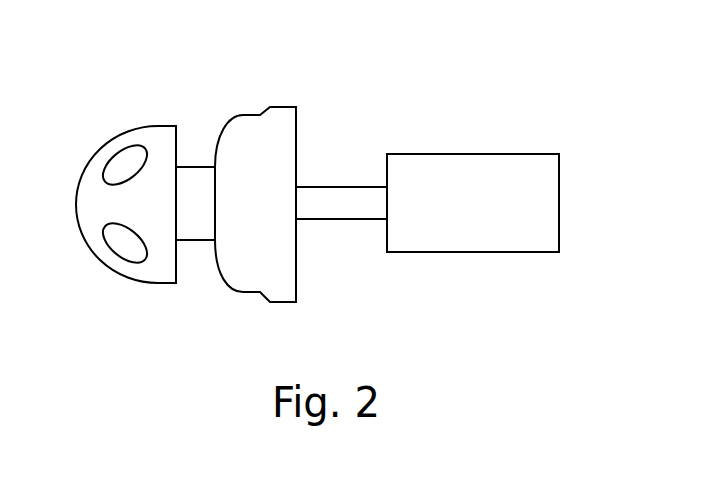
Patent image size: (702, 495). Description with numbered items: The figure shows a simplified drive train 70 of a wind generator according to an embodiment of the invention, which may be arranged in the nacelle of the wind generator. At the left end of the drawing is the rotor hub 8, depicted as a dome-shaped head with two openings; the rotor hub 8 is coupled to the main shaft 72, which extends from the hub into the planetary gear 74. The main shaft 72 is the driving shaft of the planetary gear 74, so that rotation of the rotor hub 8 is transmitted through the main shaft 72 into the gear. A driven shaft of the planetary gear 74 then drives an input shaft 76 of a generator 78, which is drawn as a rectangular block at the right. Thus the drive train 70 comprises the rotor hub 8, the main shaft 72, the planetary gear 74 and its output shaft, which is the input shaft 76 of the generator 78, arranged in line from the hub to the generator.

The rotor hub 8 is at (153, 96).
The drive train 70 is at (512, 94).
The main shaft 72 is at (188, 165).
The planetary gear 74 is at (281, 84).
The input shaft 76 is at (340, 185).
The generator 78 is at (437, 153).